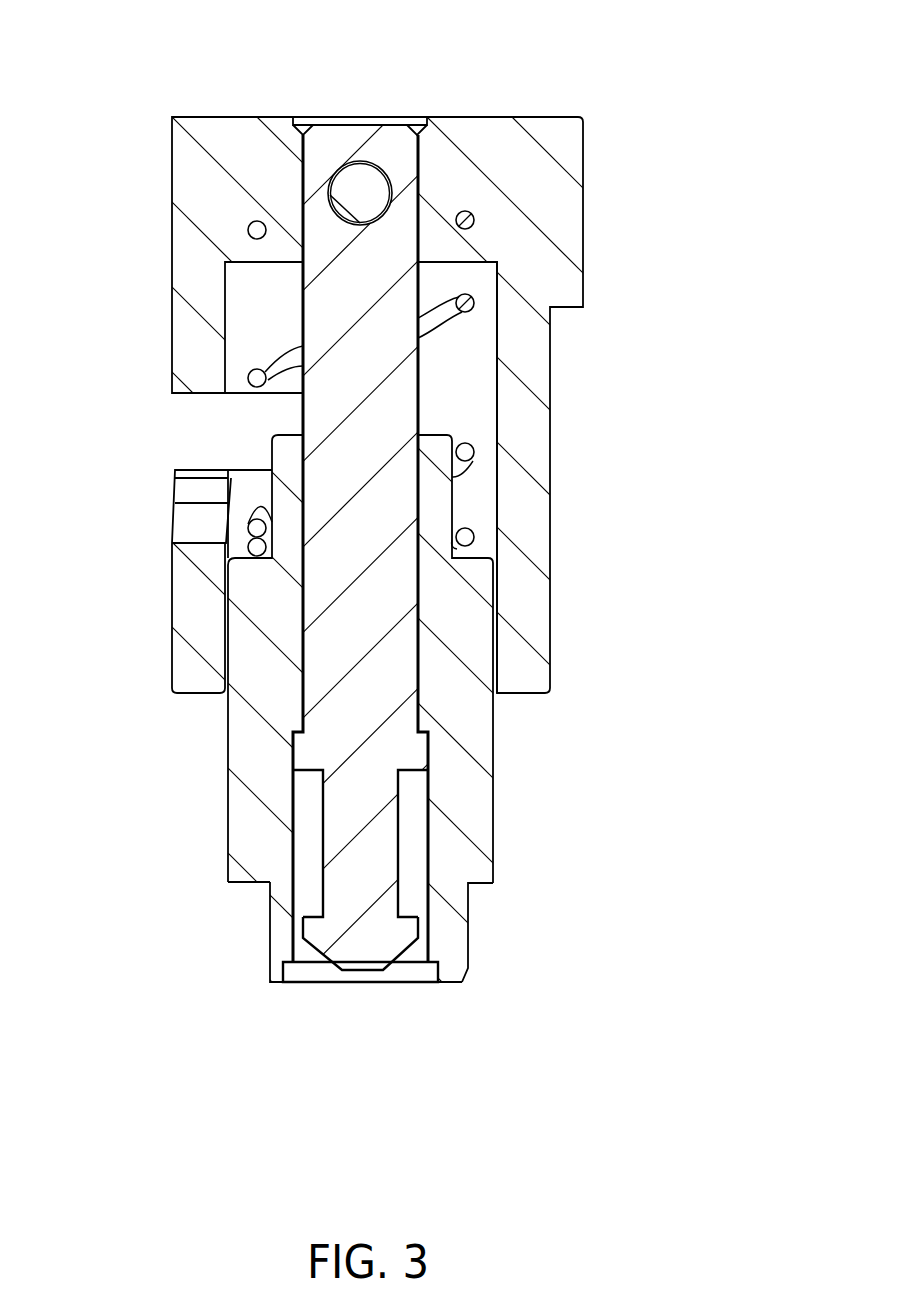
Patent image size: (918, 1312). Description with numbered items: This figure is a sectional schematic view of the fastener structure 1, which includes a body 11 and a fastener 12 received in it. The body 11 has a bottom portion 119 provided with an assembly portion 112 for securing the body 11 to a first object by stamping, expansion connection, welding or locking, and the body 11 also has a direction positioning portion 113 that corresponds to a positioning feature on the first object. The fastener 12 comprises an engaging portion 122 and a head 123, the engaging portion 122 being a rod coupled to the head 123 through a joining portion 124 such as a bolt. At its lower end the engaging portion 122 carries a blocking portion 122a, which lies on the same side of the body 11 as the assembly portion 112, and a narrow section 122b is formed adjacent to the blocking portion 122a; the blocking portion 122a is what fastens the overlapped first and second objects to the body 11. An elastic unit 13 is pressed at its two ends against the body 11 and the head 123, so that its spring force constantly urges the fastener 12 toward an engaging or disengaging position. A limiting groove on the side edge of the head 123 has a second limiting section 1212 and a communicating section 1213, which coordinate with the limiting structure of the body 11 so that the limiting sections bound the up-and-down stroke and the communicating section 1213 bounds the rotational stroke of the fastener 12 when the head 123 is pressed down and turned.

The fastener structure 1 is at (52, 34).
The body 11 is at (459, 656).
The assembly portion 112 is at (467, 927).
The direction positioning portion 113 is at (270, 933).
The bottom portion 119 is at (243, 888).
The fastener 12 is at (459, 656).
The engaging portion 122 is at (459, 639).
The blocking portion 122a is at (357, 947).
The narrow section 122b is at (355, 818).
The head 123 is at (462, 117).
The joining portion 124 is at (358, 187).
The elastic unit 13 is at (497, 280).
The second limiting section 1212 is at (195, 538).
The communicating section 1213 is at (459, 656).